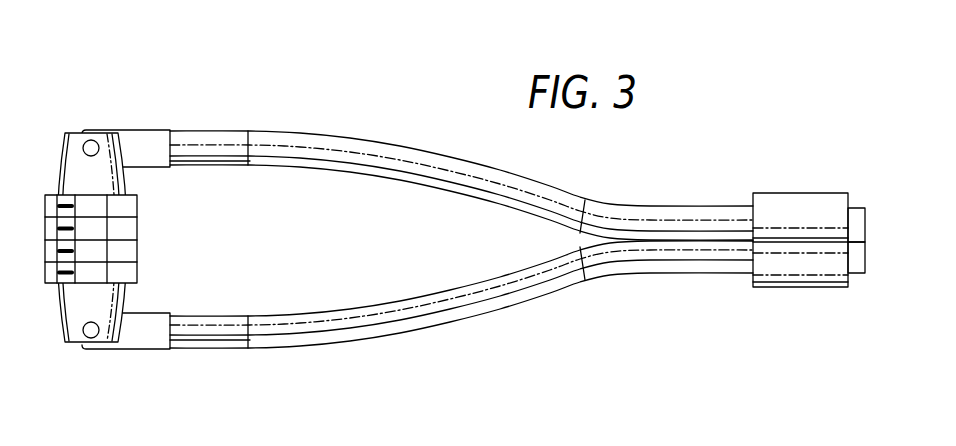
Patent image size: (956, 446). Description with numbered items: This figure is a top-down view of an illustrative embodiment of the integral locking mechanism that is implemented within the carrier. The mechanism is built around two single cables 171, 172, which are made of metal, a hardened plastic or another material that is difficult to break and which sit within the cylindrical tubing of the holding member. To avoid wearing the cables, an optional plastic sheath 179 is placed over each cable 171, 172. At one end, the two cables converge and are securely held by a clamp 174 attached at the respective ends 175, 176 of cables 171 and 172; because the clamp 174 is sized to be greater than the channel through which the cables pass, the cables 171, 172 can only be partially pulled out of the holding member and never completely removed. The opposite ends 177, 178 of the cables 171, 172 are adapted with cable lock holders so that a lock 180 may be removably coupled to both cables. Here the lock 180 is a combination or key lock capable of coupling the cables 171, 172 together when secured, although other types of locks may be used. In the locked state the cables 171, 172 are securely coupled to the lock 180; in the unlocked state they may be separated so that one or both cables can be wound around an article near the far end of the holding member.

The cable 171 is at (212, 315).
The cable 172 is at (211, 162).
The clamp 174 is at (837, 193).
The end of cable 175 is at (817, 263).
The end of cable 176 is at (803, 210).
The opposite end of cable 177 is at (147, 349).
The opposite end of cable 178 is at (110, 128).
The plastic sheath 179 is at (306, 170).
The lock 180 is at (61, 327).